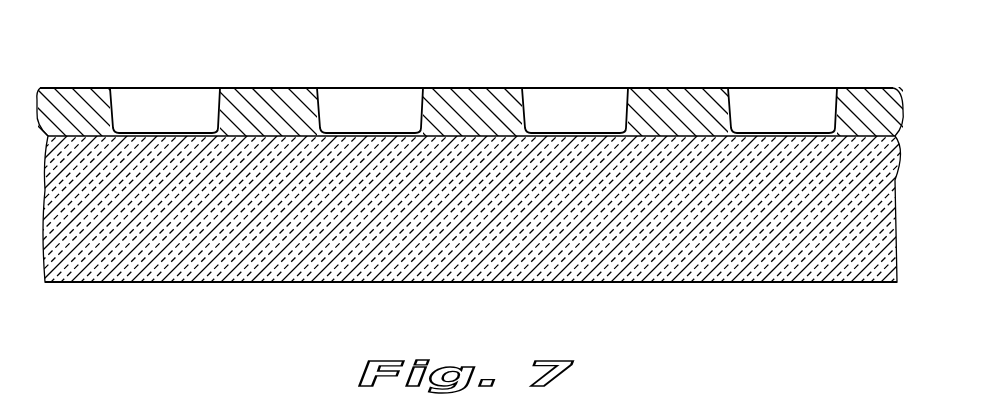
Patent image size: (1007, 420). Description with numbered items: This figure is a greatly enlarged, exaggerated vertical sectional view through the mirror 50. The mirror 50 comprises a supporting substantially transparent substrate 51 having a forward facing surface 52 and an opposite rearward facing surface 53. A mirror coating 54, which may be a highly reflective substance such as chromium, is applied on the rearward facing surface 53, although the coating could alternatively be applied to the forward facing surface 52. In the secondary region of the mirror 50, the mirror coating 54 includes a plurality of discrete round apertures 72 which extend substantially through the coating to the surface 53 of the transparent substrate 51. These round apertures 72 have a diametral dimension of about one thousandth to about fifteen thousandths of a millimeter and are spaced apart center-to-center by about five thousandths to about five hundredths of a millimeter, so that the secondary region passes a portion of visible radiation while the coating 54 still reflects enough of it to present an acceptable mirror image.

The mirror 50 is at (503, 209).
The supporting substantially transparent substrate 51 is at (770, 253).
The forward facing surface 52 is at (158, 282).
The rearward facing surface 53 is at (475, 81).
The mirror coating 54 is at (863, 107).
The round apertures 72 is at (422, 107).